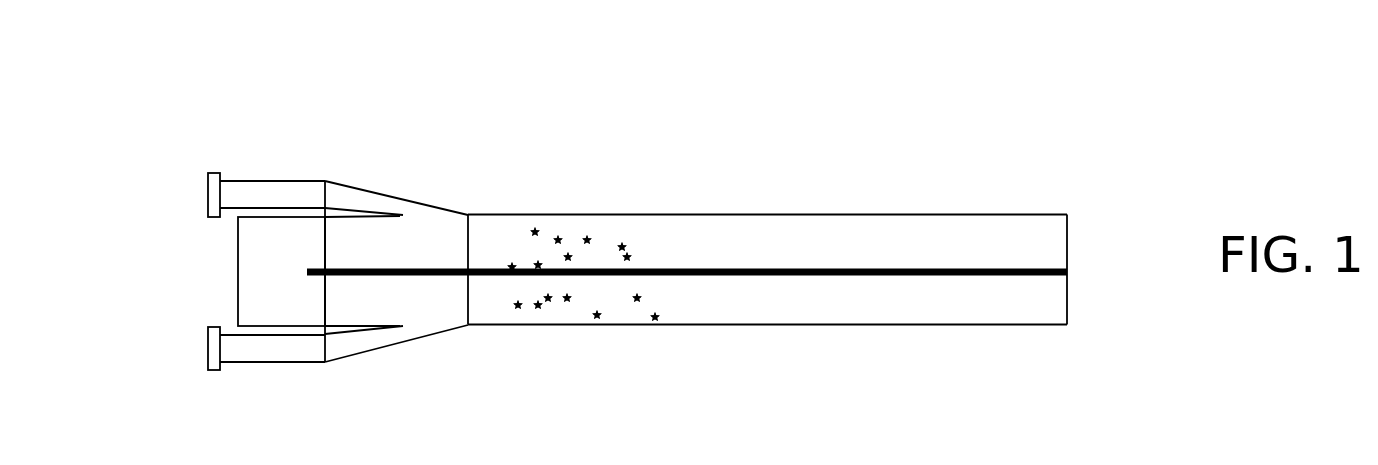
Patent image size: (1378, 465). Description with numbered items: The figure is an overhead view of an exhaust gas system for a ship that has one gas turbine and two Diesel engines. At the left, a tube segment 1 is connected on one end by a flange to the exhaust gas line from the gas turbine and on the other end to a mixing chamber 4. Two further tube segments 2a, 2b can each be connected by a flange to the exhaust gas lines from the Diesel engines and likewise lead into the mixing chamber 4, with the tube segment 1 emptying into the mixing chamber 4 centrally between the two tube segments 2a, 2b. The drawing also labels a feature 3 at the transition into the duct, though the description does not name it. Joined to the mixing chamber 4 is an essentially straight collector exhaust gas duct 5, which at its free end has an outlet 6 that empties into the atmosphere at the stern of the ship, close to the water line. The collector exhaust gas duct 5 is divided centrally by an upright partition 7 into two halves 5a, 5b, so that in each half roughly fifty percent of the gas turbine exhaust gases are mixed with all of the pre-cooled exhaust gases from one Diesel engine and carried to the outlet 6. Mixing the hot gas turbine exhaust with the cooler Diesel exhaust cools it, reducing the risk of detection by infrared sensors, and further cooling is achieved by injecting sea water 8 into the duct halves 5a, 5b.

The tube segment 1 is at (277, 295).
The tube segment 2a is at (277, 202).
The tube segment 2b is at (250, 350).
The nozzle / outlet opening 3 is at (480, 184).
The mixing chamber 4 is at (423, 242).
The collector exhaust gas duct 5 is at (767, 182).
The duct half 5a is at (576, 157).
The duct half 5b is at (577, 379).
The outlet 6 is at (1068, 248).
The upright partition 7 is at (802, 269).
The sea water 8 is at (587, 240).